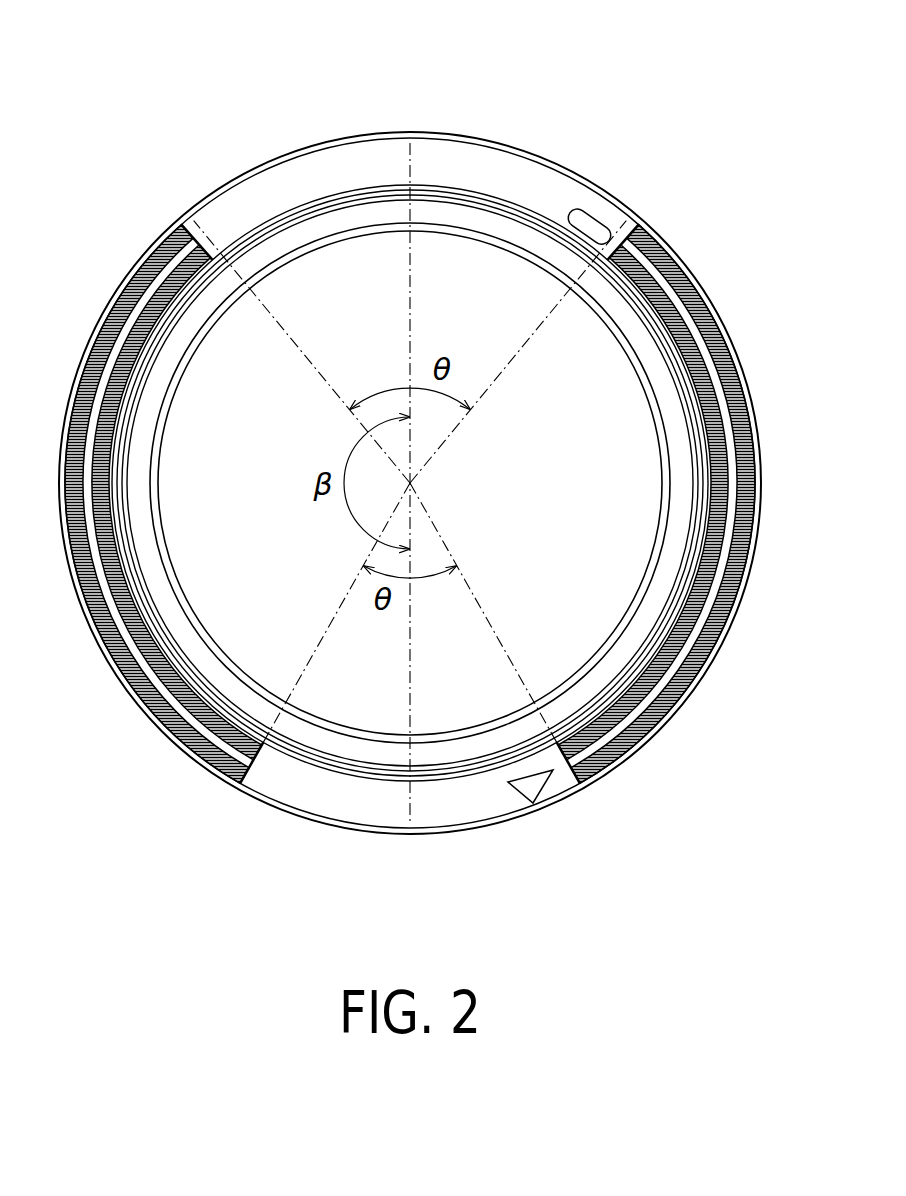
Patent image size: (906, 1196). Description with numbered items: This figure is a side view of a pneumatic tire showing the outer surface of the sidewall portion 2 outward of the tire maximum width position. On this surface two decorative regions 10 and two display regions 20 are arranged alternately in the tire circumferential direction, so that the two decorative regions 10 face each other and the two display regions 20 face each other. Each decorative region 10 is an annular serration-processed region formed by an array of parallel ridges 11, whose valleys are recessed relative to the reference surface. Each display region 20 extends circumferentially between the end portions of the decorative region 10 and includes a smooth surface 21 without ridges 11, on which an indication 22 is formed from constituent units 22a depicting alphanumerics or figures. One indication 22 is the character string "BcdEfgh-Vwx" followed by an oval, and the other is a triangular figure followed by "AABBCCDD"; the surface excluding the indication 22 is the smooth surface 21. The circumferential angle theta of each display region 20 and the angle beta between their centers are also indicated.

The sidewall portion 2 is at (503, 88).
The decorative region 10 is at (150, 262).
The ridge 11 is at (108, 305).
The display region 20 is at (397, 145).
The smooth surface 21 is at (550, 177).
The indication 22 is at (333, 160).
The constituent unit 22a is at (327, 805).